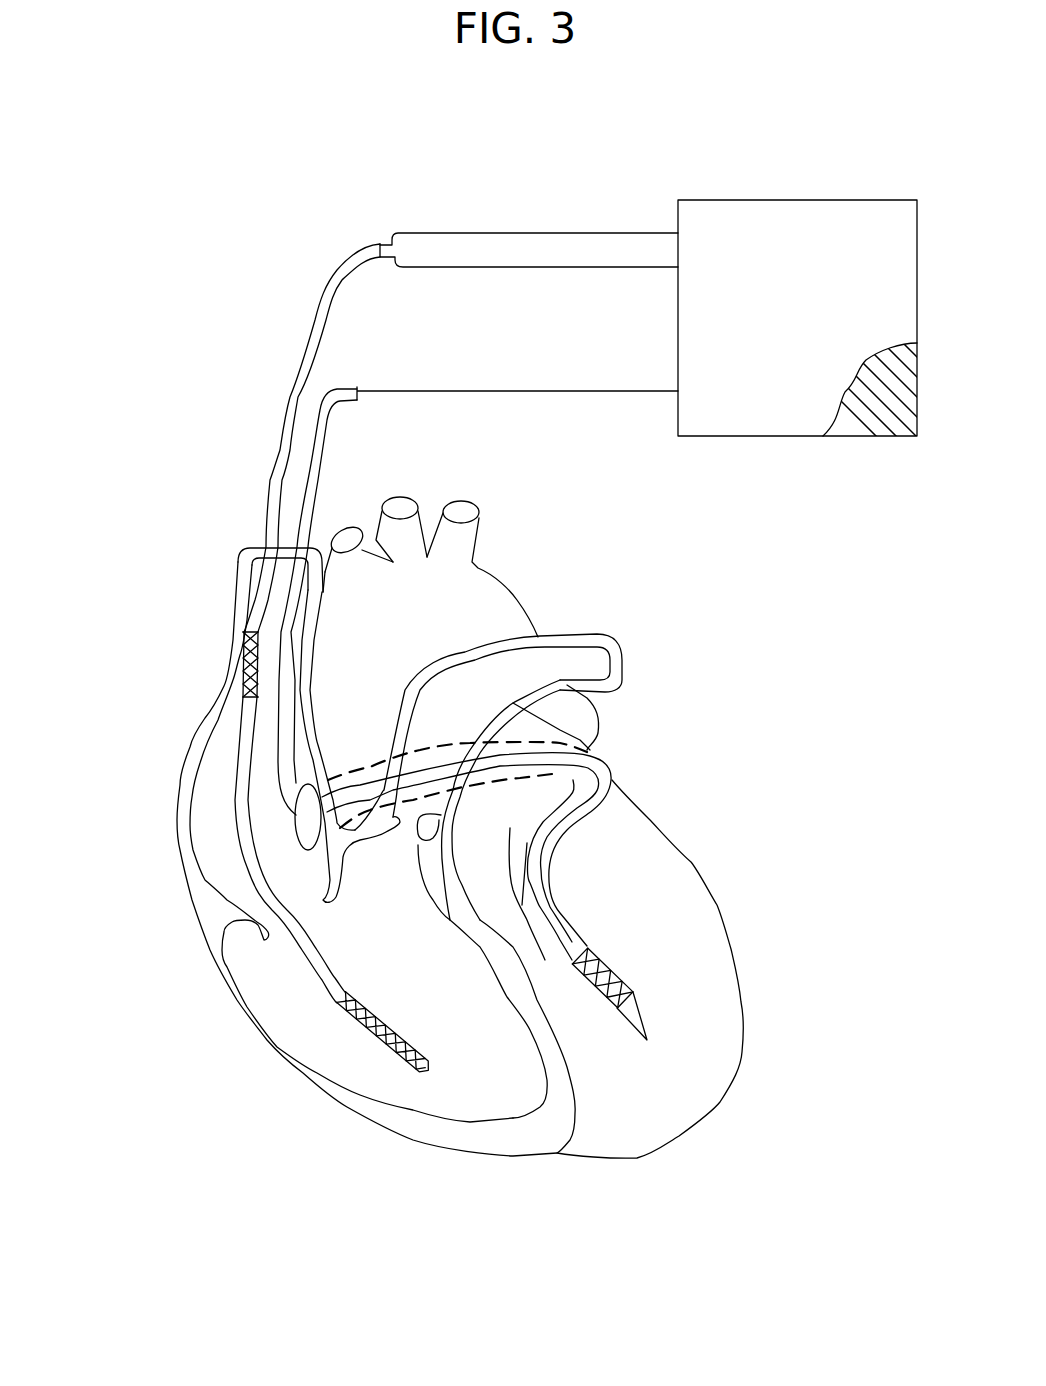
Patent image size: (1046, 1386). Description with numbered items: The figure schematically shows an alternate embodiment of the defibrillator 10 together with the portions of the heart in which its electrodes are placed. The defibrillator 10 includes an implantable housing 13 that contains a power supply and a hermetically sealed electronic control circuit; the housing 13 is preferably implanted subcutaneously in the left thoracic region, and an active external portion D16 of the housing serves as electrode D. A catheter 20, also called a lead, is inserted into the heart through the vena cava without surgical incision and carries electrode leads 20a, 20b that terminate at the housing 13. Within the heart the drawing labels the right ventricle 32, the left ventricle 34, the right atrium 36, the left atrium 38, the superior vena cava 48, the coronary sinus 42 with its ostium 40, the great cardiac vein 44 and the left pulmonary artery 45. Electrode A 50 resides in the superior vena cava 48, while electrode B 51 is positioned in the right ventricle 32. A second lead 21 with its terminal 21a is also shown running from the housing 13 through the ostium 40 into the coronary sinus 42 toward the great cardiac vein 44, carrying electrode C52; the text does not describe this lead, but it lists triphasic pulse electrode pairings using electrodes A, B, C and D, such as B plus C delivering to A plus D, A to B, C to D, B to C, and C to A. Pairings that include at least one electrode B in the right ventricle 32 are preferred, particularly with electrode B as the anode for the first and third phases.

The defibrillator 10 is at (198, 492).
The implantable housing 13 is at (838, 200).
The active external portion of the housing D16 is at (864, 428).
The catheter 20 is at (298, 370).
The electrode lead 20a is at (400, 233).
The electrode lead 20b is at (403, 268).
The second lead 21 is at (330, 408).
The second lead connector 21a is at (545, 391).
The right ventricle 32 is at (478, 981).
The left ventricle 34 is at (611, 969).
The right atrium 36 is at (227, 828).
The left atrium 38 is at (461, 662).
The coronary sinus ostium 40 is at (305, 832).
The coronary sinus 42 is at (593, 752).
The great cardiac vein 44 is at (647, 1027).
The left pulmonary artery 45 is at (613, 660).
The superior vena cava 48 is at (212, 707).
The electrode A 50 is at (257, 653).
The electrode B 51 is at (387, 1043).
The electrode C C52 is at (613, 987).